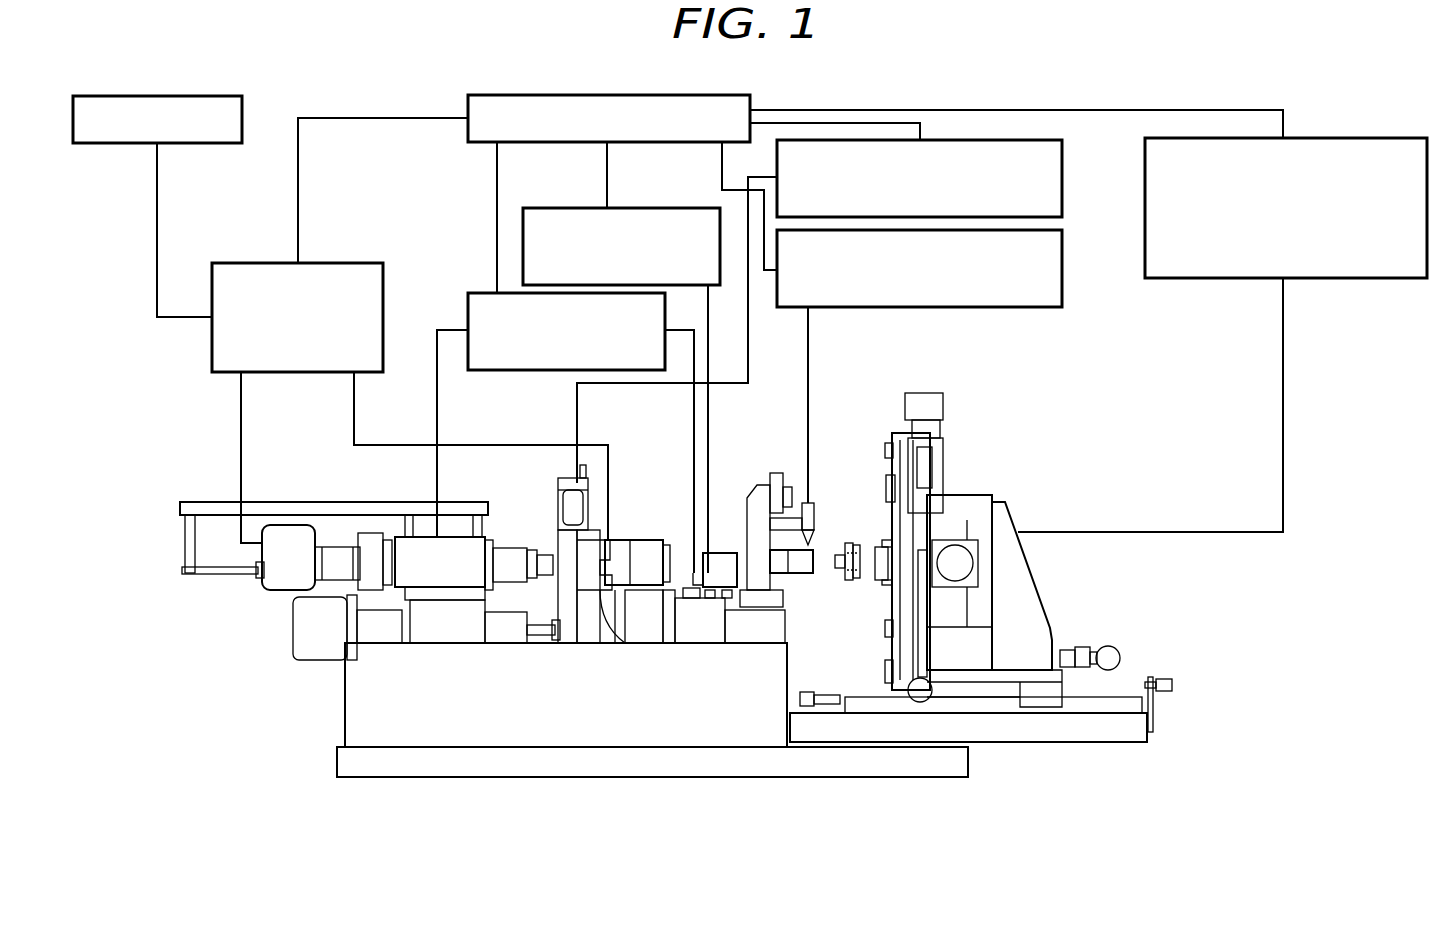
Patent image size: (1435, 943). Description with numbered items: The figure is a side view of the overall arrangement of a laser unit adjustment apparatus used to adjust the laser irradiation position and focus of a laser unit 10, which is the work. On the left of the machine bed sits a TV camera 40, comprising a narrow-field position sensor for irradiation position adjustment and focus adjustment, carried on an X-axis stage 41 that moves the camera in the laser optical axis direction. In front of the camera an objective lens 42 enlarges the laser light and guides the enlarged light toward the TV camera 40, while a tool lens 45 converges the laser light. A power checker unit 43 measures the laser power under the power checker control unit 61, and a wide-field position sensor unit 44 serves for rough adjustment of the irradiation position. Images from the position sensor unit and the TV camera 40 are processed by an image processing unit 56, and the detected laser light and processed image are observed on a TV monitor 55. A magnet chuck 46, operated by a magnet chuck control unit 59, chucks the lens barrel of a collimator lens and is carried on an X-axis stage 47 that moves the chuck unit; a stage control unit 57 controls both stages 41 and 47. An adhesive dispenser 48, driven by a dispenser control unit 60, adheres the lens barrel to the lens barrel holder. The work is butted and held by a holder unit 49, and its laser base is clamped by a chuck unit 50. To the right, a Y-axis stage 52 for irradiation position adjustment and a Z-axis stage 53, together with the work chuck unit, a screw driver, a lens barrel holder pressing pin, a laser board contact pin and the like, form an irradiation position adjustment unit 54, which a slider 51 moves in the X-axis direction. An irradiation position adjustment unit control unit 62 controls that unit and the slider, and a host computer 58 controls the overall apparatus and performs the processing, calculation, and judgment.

The laser unit 10 is at (846, 546).
The TV camera 40 is at (290, 532).
The X-axis stage 41 is at (433, 608).
The objective lens 42 is at (540, 555).
The power checker unit 43 is at (570, 478).
The wide-field position sensor unit 44 is at (618, 560).
The tool lens 45 is at (649, 546).
The magnet chuck 46 is at (723, 554).
The X-axis stage 47 is at (700, 618).
The adhesive dispenser 48 is at (813, 502).
The holder unit 49 is at (800, 575).
The chuck unit 50 is at (878, 574).
The slider 51 is at (1008, 700).
The Y-axis stage 52 is at (940, 535).
The Z-axis stage 53 is at (908, 542).
The irradiation position adjustment unit 54 is at (1048, 618).
The TV monitor 55 is at (225, 145).
The image processing unit 56 is at (232, 263).
The stage control unit 57 is at (468, 314).
The host computer 58 is at (468, 103).
The magnet chuck control unit 59 is at (682, 206).
The dispenser control unit 60 is at (1064, 251).
The power checker control unit 61 is at (1064, 166).
The irradiation position adjustment unit control unit 62 is at (1414, 125).